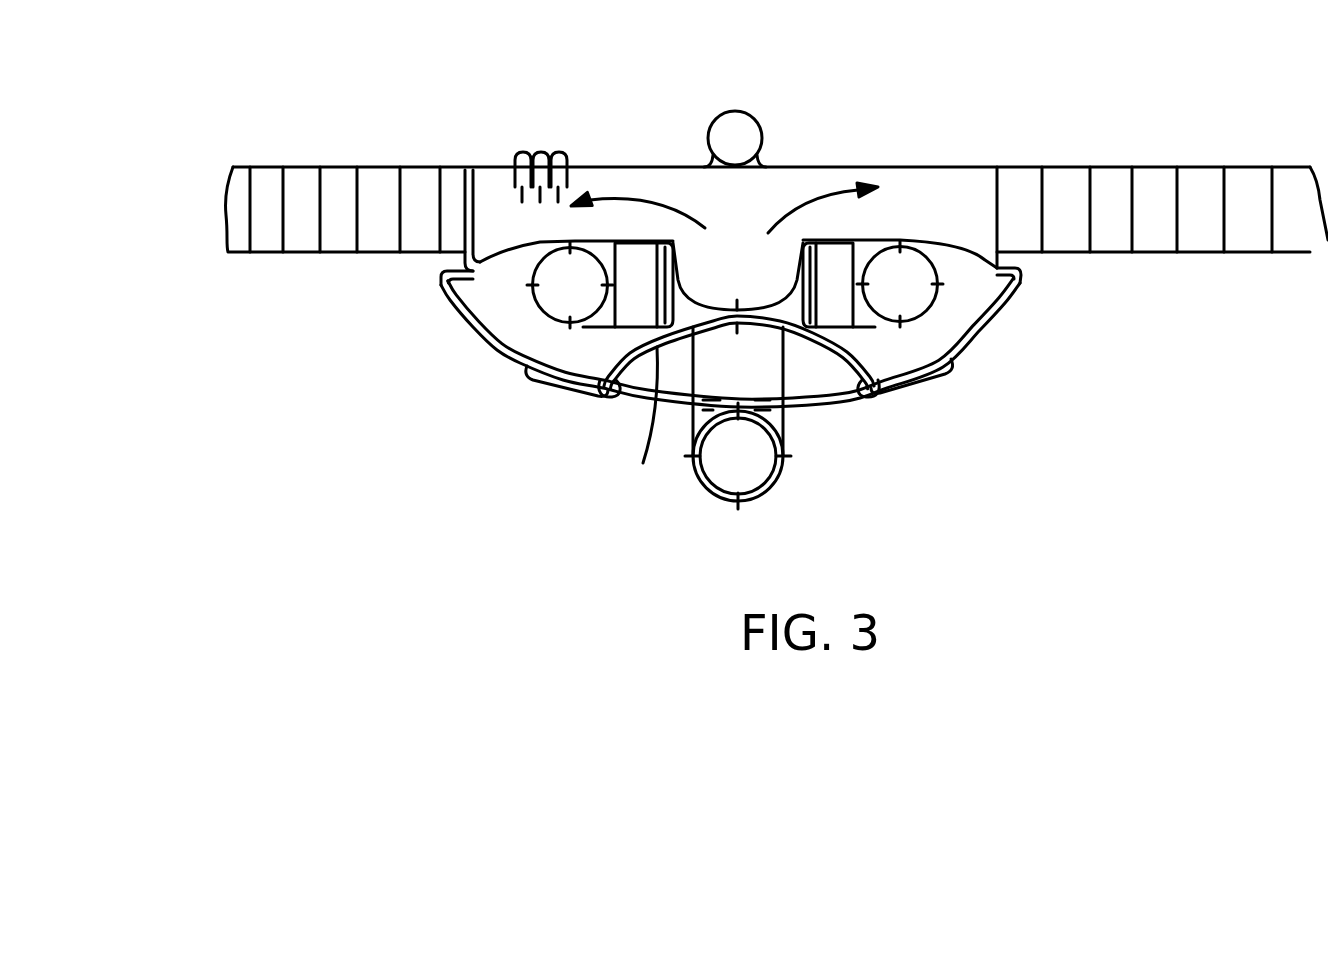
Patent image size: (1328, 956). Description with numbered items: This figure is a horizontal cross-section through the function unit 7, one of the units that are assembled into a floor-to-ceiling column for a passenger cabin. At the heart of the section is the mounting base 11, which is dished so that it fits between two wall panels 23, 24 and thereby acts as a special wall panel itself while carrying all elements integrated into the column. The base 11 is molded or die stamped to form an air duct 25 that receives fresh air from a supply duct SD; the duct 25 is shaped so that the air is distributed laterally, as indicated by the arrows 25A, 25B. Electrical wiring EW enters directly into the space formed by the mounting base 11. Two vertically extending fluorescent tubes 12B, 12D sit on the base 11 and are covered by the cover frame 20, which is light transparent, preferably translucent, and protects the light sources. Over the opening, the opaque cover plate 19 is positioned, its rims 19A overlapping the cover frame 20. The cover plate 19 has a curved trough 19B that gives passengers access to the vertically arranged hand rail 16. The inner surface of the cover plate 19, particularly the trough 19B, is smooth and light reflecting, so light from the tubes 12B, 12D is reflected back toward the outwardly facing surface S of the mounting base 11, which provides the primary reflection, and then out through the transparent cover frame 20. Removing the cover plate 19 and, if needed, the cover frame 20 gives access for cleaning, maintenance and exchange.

The function unit 7 is at (318, 405).
The mounting base 11 is at (952, 138).
The fluorescent tube 12B is at (920, 304).
The fluorescent tube 12D is at (560, 310).
The hand rail 16 is at (748, 487).
The cover plate 19 is at (825, 432).
The rims 19A is at (553, 390).
The trough 19B is at (646, 434).
The cover frame 20 is at (477, 342).
The wall panel 23 is at (1108, 192).
The wall panel 24 is at (340, 190).
The air duct 25 is at (905, 200).
The arrow 25A is at (607, 195).
The arrow 25B is at (812, 200).
The electrical wiring EW is at (537, 132).
The outwardly facing surface S is at (516, 255).
The supply duct SD is at (724, 136).